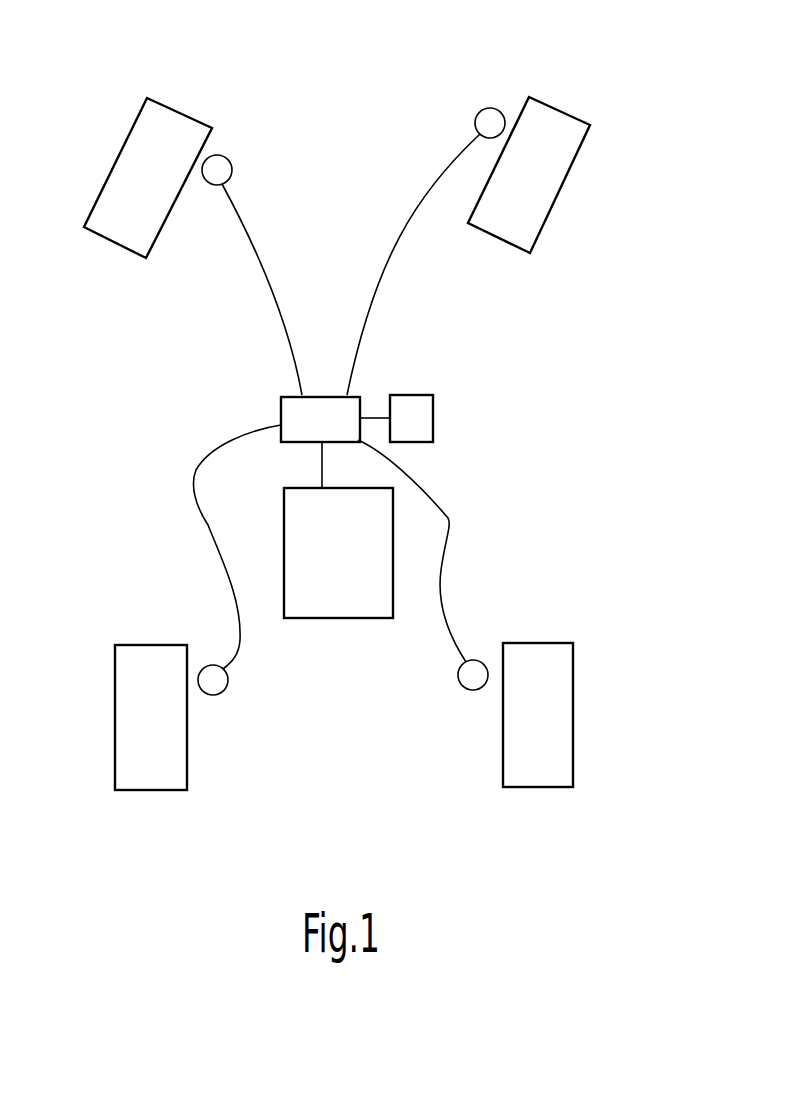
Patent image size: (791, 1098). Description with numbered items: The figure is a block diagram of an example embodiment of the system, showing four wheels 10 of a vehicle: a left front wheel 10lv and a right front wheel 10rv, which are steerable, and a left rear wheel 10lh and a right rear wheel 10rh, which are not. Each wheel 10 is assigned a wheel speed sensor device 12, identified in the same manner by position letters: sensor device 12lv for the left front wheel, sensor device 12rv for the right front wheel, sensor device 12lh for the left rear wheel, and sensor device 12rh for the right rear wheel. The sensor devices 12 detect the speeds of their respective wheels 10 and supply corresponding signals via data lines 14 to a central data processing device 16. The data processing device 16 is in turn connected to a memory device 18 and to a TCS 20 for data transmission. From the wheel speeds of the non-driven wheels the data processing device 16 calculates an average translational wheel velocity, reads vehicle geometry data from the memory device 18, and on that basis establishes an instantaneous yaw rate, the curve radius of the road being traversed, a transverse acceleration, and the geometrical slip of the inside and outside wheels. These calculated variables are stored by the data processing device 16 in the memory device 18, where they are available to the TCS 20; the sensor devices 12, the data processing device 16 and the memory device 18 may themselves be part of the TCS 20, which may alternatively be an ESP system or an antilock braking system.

The wheel 10 is at (597, 656).
The left front wheel 10lv is at (122, 178).
The right front wheel 10rv is at (545, 183).
The left rear wheel 10lh is at (138, 742).
The right rear wheel 10rh is at (558, 732).
The wheel speed sensor device 12 is at (190, 698).
The left front wheel speed sensor device 12lv is at (217, 167).
The right front wheel speed sensor device 12rv is at (487, 115).
The left rear wheel speed sensor device 12lh is at (212, 678).
The right rear wheel speed sensor device 12rh is at (462, 687).
The data line 14 is at (268, 272).
The data processing device 16 is at (335, 432).
The memory device 18 is at (423, 415).
The TCS 20 is at (353, 578).